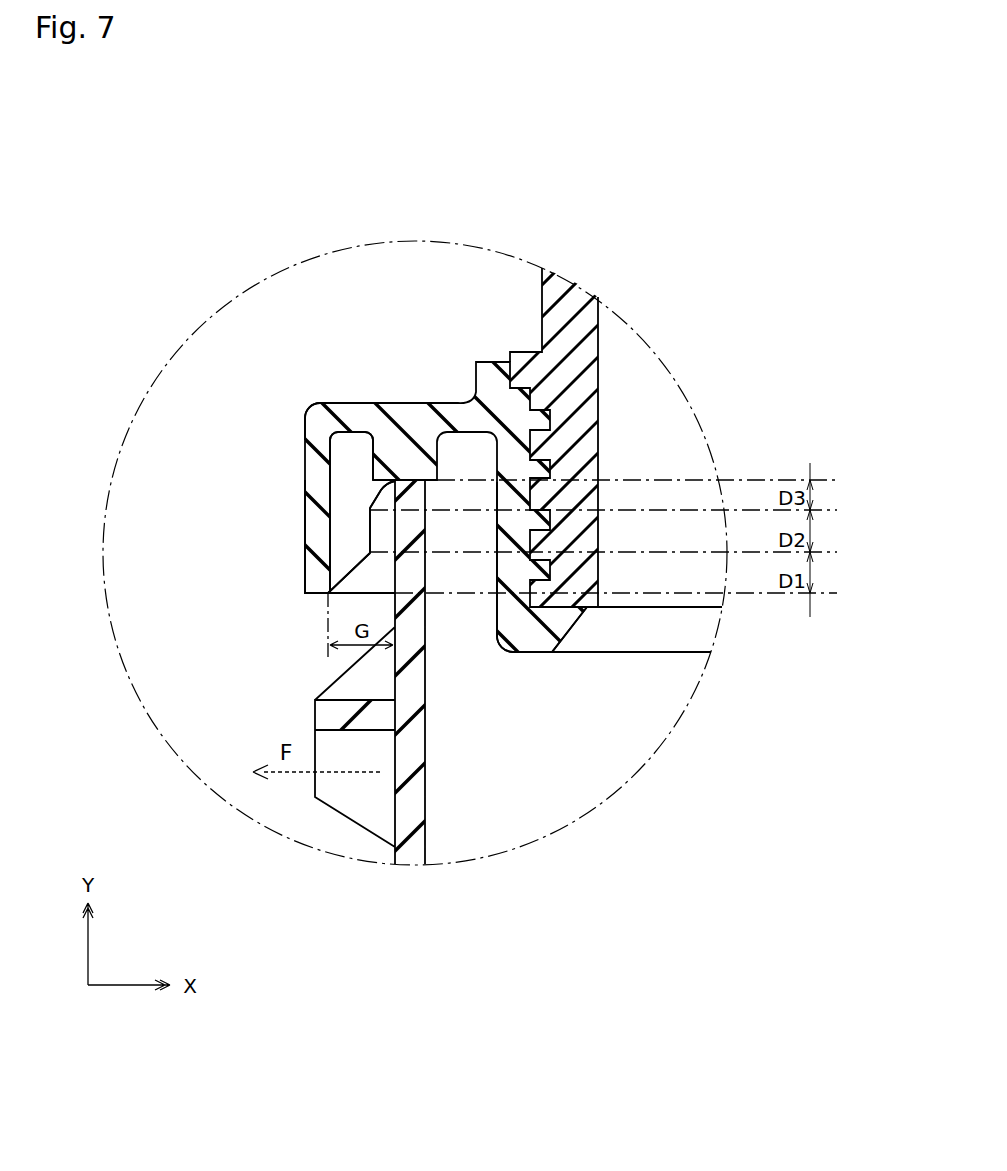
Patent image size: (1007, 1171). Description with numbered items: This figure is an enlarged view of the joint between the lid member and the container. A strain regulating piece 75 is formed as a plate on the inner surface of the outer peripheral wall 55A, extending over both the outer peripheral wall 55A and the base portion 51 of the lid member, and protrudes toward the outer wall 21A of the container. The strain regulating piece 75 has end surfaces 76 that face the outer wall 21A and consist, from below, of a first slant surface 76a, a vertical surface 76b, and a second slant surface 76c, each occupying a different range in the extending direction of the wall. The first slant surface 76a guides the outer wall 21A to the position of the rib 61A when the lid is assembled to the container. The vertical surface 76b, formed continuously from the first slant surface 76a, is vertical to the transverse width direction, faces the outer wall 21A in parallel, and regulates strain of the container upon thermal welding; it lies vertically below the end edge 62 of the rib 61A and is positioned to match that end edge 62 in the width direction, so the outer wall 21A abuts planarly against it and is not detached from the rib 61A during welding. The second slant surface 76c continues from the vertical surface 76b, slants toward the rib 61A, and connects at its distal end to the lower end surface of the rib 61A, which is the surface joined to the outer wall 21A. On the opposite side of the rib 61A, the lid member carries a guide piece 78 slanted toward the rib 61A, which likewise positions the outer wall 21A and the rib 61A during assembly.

The rib 61A is at (417, 405).
The base portion 51 is at (367, 417).
The end edge 62 is at (368, 481).
The strain regulating piece 75 is at (345, 445).
The end surfaces 76 is at (199, 568).
The first slant surface 76a is at (348, 575).
The vertical surface 76b is at (367, 532).
The second slant surface 76c is at (373, 495).
The outer peripheral wall 55A is at (314, 583).
The guide piece 78 is at (435, 480).
The outer wall 21A is at (413, 758).